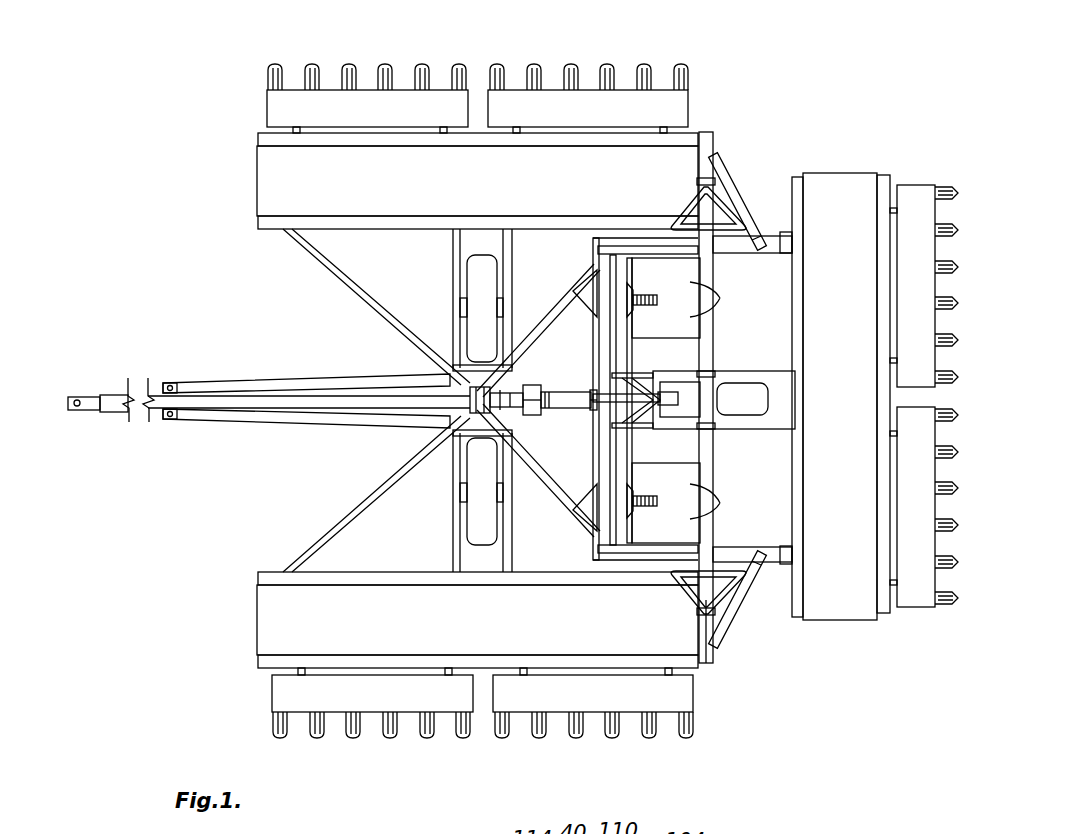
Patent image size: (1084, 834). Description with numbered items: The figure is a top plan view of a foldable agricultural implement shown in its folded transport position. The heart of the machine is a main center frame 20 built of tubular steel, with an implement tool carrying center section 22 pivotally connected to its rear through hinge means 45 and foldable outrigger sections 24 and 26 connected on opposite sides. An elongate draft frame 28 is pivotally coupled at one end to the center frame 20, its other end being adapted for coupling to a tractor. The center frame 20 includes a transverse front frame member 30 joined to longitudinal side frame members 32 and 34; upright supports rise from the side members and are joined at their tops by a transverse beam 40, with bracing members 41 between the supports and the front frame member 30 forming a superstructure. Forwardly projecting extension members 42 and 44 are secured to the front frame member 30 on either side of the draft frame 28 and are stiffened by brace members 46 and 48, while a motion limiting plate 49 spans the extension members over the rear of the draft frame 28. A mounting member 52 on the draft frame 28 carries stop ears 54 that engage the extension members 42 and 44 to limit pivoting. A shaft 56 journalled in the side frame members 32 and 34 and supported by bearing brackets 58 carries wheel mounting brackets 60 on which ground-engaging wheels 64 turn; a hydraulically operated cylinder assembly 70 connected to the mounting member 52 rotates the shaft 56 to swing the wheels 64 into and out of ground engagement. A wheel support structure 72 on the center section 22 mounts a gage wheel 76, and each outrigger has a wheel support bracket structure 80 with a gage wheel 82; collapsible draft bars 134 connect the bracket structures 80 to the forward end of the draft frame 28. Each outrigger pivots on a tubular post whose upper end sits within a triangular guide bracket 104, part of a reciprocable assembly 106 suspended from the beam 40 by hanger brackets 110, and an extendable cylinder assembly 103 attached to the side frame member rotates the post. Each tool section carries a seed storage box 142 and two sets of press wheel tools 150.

The main center frame 20 is at (598, 537).
The implement tool carrying center section 22 is at (848, 172).
The outrigger section 24 is at (256, 656).
The outrigger section 26 is at (256, 150).
The draft frame 28 is at (207, 404).
The front frame member 30 is at (600, 258).
The side frame member 32 is at (741, 539).
The side frame member 34 is at (745, 250).
The beam 40 is at (714, 652).
The bracing member 41 is at (626, 246).
The extension member 42 is at (561, 389).
The extension member 44 is at (545, 415).
The hinge means 45 is at (783, 234).
The brace member 46 is at (532, 331).
The brace member 48 is at (570, 495).
The motion limiting plate 49 is at (530, 385).
The mounting member 52 is at (470, 395).
The stop ears 54 is at (445, 422).
The shaft 56 is at (630, 268).
The bearing brackets 58 is at (636, 378).
The wheel mounting brackets 60 is at (650, 305).
The ground-engaging wheel 64 is at (716, 298).
The hydraulically operated extendable cylinder assembly 70 is at (570, 410).
The wheel support structure 72 is at (773, 371).
The gage wheel 76 is at (768, 420).
The wheel support bracket structure 80 is at (505, 245).
The gage wheel 82 is at (470, 276).
The extendable cylinder assembly 103 is at (737, 201).
The guide bracket 104 is at (684, 216).
The reciprocable assembly 106 is at (718, 340).
The hanger brackets 110 is at (700, 181).
The collapsible draft bars 134 is at (229, 383).
The seed storage box 142 is at (275, 186).
The press wheel tools 150 is at (470, 66).